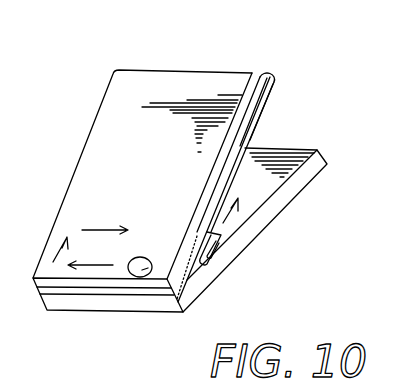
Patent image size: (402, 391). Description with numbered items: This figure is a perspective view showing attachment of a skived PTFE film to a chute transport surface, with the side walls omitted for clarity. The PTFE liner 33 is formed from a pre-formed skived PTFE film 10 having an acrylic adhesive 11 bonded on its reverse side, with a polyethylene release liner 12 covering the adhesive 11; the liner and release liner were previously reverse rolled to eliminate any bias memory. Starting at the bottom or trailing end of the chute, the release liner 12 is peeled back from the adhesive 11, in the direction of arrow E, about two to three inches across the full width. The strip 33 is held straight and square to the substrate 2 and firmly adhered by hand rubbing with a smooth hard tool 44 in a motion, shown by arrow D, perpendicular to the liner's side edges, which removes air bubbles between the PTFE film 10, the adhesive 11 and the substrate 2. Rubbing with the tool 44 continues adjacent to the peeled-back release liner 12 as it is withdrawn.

The PTFE liner 33 is at (138, 88).
The skived PTFE film 10 is at (259, 77).
The acrylic adhesive 11 is at (268, 69).
The release liner 12 is at (272, 90).
The substrate 2 is at (292, 187).
The tool 44 is at (135, 272).